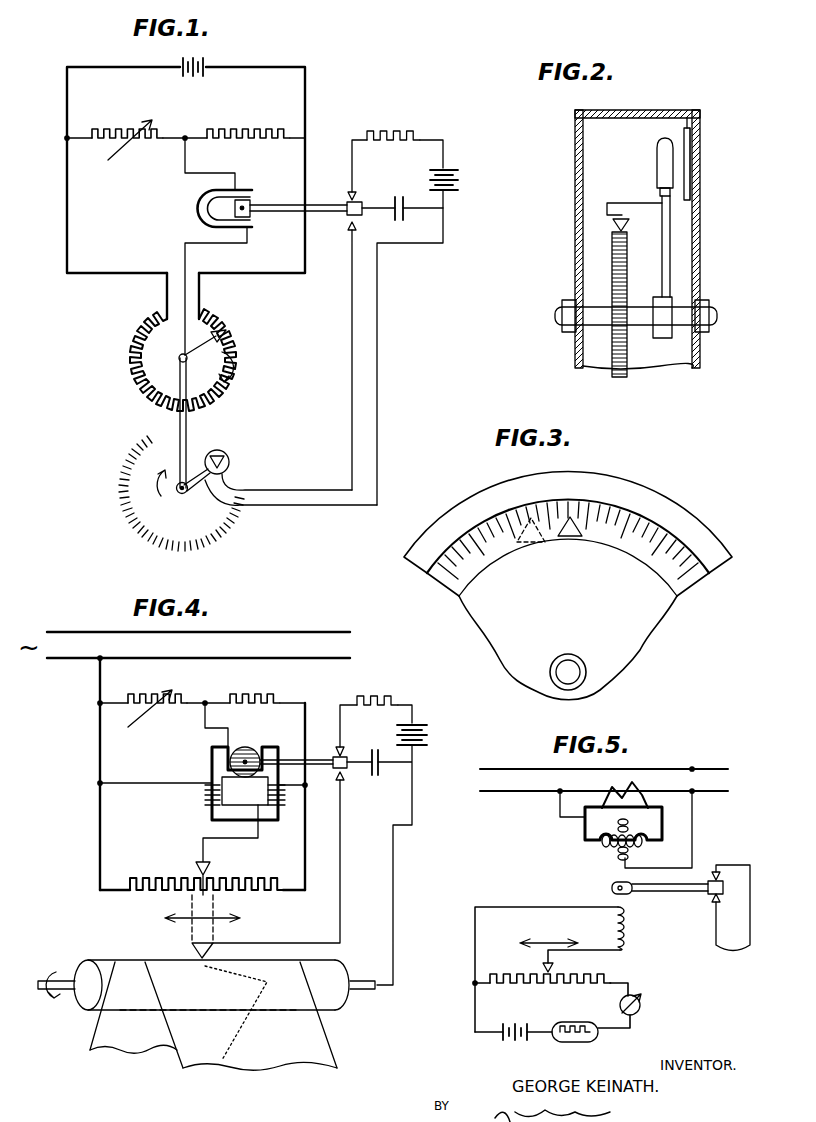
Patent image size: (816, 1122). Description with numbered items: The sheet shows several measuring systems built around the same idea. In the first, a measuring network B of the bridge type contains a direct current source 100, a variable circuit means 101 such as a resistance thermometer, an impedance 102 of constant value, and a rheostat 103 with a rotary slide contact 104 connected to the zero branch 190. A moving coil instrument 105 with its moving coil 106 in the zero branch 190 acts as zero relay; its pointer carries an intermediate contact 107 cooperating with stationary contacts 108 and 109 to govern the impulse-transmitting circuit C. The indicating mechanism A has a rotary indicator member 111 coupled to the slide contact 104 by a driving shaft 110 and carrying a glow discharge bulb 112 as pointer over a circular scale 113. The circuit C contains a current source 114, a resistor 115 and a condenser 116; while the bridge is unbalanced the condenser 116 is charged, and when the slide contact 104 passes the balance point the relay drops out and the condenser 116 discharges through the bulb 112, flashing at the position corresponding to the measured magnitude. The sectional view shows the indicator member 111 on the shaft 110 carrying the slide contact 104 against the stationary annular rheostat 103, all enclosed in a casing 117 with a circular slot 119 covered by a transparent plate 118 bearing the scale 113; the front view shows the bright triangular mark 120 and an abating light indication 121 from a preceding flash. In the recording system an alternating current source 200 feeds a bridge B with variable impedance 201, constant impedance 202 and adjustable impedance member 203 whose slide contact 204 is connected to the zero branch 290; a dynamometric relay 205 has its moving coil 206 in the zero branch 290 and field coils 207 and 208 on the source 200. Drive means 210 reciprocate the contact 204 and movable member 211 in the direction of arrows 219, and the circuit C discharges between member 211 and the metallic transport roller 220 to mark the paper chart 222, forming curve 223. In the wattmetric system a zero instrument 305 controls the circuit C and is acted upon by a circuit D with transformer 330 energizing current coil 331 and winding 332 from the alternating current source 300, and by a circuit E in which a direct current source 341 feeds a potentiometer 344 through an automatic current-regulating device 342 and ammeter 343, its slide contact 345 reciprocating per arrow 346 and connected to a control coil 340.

In FIG. 1, the direct current source 100 is at (208, 64).
In FIG. 1, the variable circuit means 101 is at (148, 150).
In FIG. 1, the impedance 102 is at (248, 133).
In FIG. 1, the rheostat 103 is at (130, 350).
In FIG. 2, the rheostat 103 is at (612, 253).
In FIG. 1, the rotary slide contact 104 is at (204, 338).
In FIG. 2, the rotary slide contact 104 is at (607, 219).
In FIG. 1, the moving coil instrument 105 is at (200, 206).
In FIG. 1, the moving coil 106 is at (243, 203).
In FIG. 1, the intermediate contact 107 is at (348, 215).
In FIG. 4, the intermediate contact 107 is at (348, 758).
In FIG. 5, the intermediate contact 107 is at (708, 891).
In FIG. 1, the stationary contact 108 is at (350, 196).
In FIG. 4, the stationary contact 108 is at (339, 755).
In FIG. 5, the stationary contact 108 is at (715, 871).
In FIG. 1, the stationary contact 109 is at (350, 232).
In FIG. 4, the stationary contact 109 is at (339, 783).
In FIG. 5, the stationary contact 109 is at (714, 906).
In FIG. 1, the driving shaft 110 is at (180, 424).
In FIG. 2, the driving shaft 110 is at (558, 315).
In FIG. 3, the driving shaft 110 is at (575, 672).
In FIG. 1, the rotary indicator member 111 is at (190, 497).
In FIG. 2, the rotary indicator member 111 is at (671, 242).
In FIG. 1, the glow discharge bulb 112 is at (223, 455).
In FIG. 2, the glow discharge bulb 112 is at (663, 138).
In FIG. 1, the circular scale 113 is at (225, 530).
In FIG. 3, the circular scale 113 is at (699, 578).
In FIG. 1, the current source 114 is at (445, 168).
In FIG. 4, the current source 114 is at (412, 735).
In FIG. 1, the resistor 115 is at (395, 130).
In FIG. 4, the resistor 115 is at (383, 698).
In FIG. 1, the condenser 116 is at (398, 197).
In FIG. 4, the condenser 116 is at (374, 778).
In FIG. 2, the casing 117 is at (700, 266).
In FIG. 3, the casing 117 is at (665, 504).
In FIG. 2, the transparent plate 118 is at (692, 142).
In FIG. 2, the circular slot 119 is at (700, 163).
In FIG. 3, the mark 120 is at (571, 517).
In FIG. 3, the abating light indication 121 is at (520, 526).
In FIG. 1, the zero branch 190 is at (185, 243).
In FIG. 4, the alternating current source 200 is at (355, 634).
In FIG. 4, the variable impedance 201 is at (156, 700).
In FIG. 4, the impedance of constant magnitude 202 is at (255, 690).
In FIG. 4, the adjustable impedance member 203 is at (256, 878).
In FIG. 4, the slide contact 204 is at (202, 862).
In FIG. 4, the dynamometric relay 205 is at (212, 758).
In FIG. 4, the moving coil 206 is at (250, 750).
In FIG. 4, the field coil 207 is at (205, 800).
In FIG. 4, the field coil 208 is at (280, 802).
In FIG. 4, the drive means 210 is at (178, 914).
In FIG. 4, the movable member 211 is at (190, 950).
In FIG. 4, the arrows 219 is at (230, 914).
In FIG. 4, the transport roller 220 is at (330, 1005).
In FIG. 4, the paper chart 222 is at (330, 1053).
In FIG. 4, the curve 223 is at (233, 1050).
In FIG. 4, the zero branch 290 is at (205, 728).
In FIG. 5, the alternating current source 300 is at (663, 782).
In FIG. 5, the zero instrument 305 is at (645, 894).
In FIG. 5, the transformer 330 is at (612, 785).
In FIG. 5, the current coil 331 is at (606, 849).
In FIG. 5, the winding 332 is at (630, 855).
In FIG. 5, the control coil 340 is at (614, 926).
In FIG. 5, the direct current source 341 is at (506, 1042).
In FIG. 5, the automatic current-regulating device 342 is at (582, 1042).
In FIG. 5, the ammeter 343 is at (645, 1006).
In FIG. 5, the potentiometer 344 is at (526, 975).
In FIG. 5, the slide contact 345 is at (556, 971).
In FIG. 5, the arrow 346 is at (549, 935).
In FIG. 1, the indicating, recording or control mechanism A is at (125, 510).
In FIG. 4, the indicating, recording or control mechanism A is at (60, 1031).
In FIG. 1, the measuring network B is at (82, 200).
In FIG. 4, the measuring network B is at (118, 745).
In FIG. 1, the impulse-transmitting circuit C is at (372, 328).
In FIG. 4, the impulse-transmitting circuit C is at (375, 881).
In FIG. 5, the impulse-transmitting circuit C is at (739, 975).
In FIG. 5, the dynamometric relay circuit D is at (571, 845).
In FIG. 5, the compensating or potentiometer circuit E is at (482, 936).